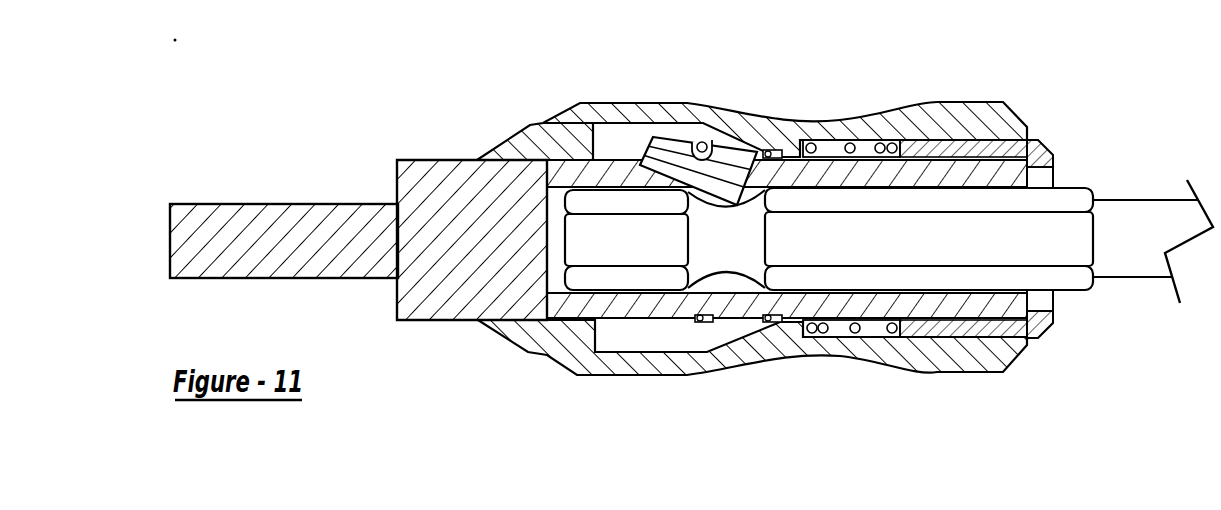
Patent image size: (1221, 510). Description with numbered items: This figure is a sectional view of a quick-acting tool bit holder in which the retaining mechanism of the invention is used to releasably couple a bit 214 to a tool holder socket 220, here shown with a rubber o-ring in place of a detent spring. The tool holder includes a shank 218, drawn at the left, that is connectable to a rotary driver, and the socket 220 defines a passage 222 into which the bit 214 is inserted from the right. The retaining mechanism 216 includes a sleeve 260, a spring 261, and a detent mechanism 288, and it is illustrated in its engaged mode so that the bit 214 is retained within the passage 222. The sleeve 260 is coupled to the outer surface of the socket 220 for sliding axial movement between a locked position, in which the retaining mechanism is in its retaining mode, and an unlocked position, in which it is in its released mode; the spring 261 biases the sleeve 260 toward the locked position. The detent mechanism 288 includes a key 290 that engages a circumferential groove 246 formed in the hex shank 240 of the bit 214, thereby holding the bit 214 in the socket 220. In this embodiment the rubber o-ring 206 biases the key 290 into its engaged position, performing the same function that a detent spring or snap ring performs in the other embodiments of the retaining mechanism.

The rubber o-ring 206 is at (700, 323).
The bit 214 is at (1067, 203).
The retaining mechanism 216 is at (554, 105).
The shank 218 is at (258, 227).
The socket 220 is at (449, 283).
The passage 222 is at (975, 185).
The hex shank 240 is at (916, 257).
The circumferential groove 246 is at (728, 318).
The sleeve 260 is at (851, 119).
The spring 261 is at (882, 143).
The detent mechanism 288 is at (639, 139).
The key 290 is at (673, 155).